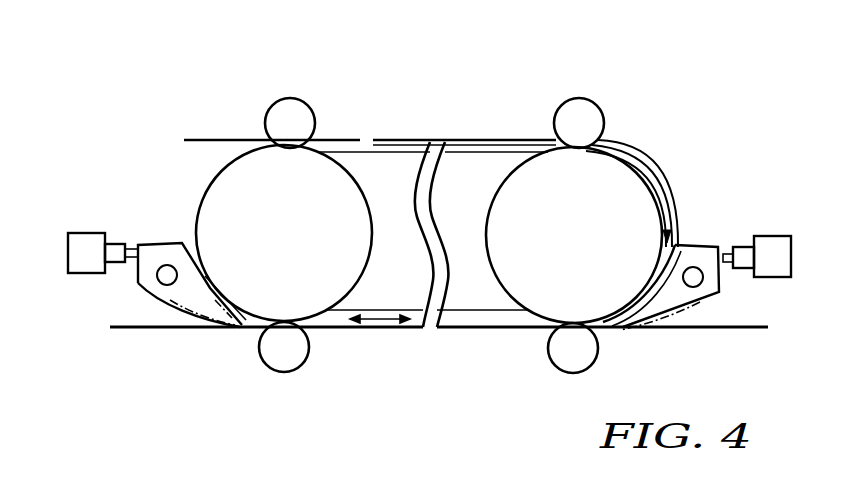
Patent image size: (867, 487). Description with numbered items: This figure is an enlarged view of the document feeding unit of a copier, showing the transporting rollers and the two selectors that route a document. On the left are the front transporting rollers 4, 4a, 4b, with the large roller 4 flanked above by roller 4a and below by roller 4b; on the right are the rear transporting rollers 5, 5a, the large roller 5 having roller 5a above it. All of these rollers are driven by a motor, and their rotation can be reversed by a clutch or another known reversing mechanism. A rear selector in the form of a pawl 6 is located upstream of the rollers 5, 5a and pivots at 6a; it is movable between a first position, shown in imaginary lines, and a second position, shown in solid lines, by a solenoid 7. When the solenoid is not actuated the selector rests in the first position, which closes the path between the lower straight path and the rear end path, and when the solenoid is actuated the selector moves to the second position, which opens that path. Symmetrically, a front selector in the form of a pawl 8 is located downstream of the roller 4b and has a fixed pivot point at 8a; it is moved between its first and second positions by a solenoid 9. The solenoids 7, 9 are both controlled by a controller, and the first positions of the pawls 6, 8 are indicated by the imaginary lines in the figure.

The front transporting roller 4 is at (237, 172).
The front transporting roller 4a is at (290, 96).
The front transporting roller 4b is at (284, 372).
The rear transporting roller 5 is at (615, 168).
The rear transporting roller 5a is at (577, 96).
The rear selector pawl 6 is at (692, 252).
The pivot of the rear selector pawl 6a is at (696, 285).
The solenoid 7 is at (773, 246).
The front selector pawl 8 is at (170, 248).
The fixed pivot point of the front selector 8a is at (167, 285).
The solenoid 9 is at (88, 240).